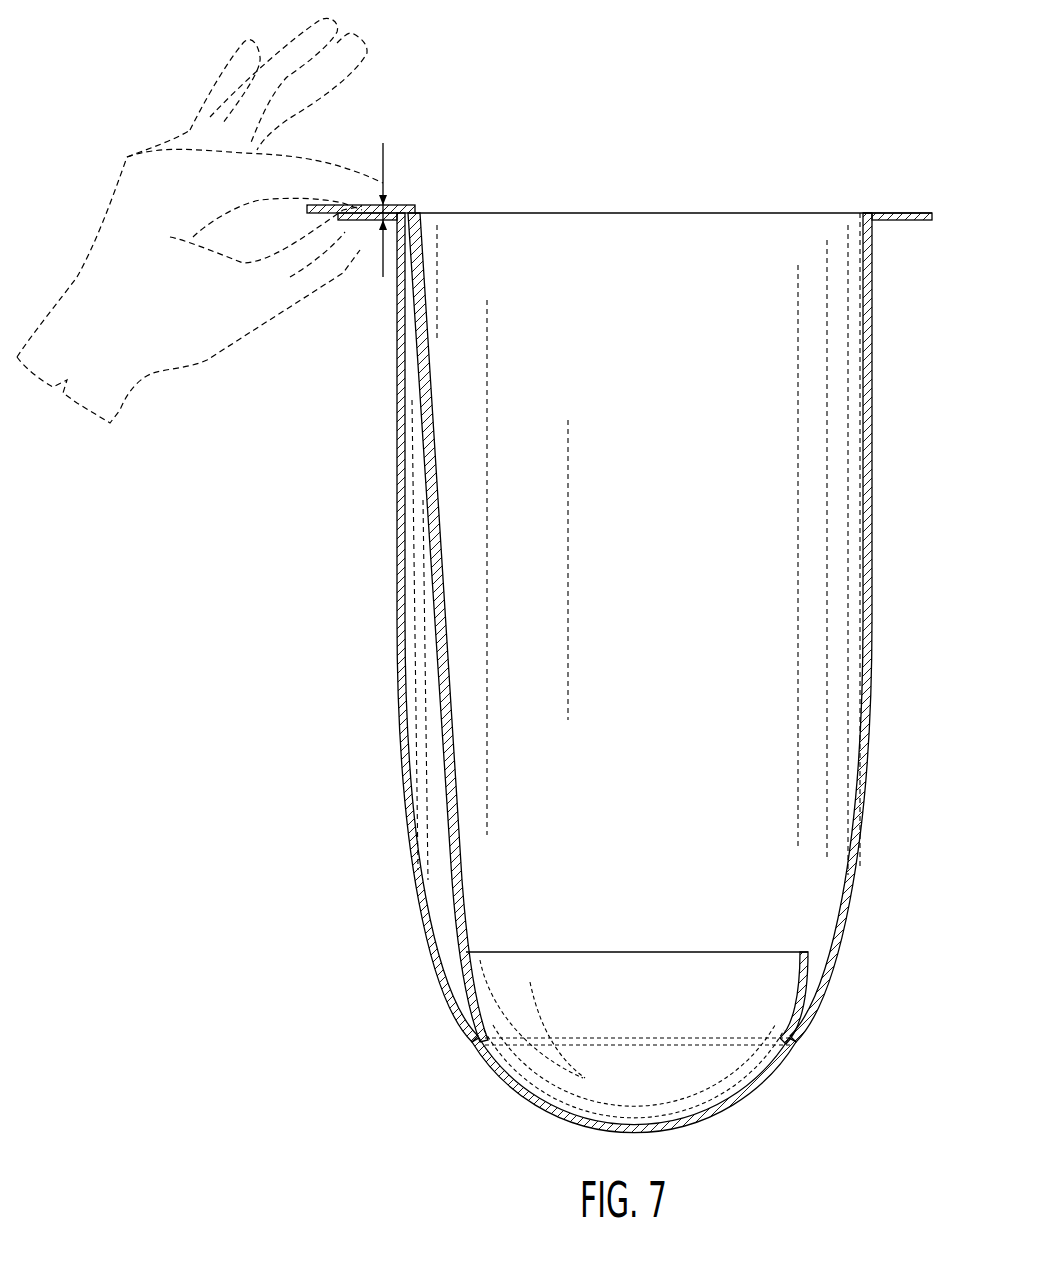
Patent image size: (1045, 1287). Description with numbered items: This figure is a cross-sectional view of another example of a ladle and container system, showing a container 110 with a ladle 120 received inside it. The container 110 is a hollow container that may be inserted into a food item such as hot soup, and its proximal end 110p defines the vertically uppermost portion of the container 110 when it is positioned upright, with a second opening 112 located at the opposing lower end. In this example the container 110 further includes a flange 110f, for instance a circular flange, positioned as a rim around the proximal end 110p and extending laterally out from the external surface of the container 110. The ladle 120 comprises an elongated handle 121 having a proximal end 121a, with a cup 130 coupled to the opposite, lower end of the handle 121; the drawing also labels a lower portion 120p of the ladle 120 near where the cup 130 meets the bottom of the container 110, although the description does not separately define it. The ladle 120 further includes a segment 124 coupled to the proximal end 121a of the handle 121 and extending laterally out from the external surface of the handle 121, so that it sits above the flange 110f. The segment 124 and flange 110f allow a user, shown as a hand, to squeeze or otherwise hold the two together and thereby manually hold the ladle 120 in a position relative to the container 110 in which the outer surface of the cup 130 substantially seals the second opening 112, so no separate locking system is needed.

The container 110 is at (873, 565).
The flange 110f is at (360, 221).
The proximal end 110p is at (859, 210).
The second opening 112 is at (683, 1047).
The ladle 120 is at (518, 295).
The liner bottom portion 120p is at (782, 1044).
The handle 121 is at (450, 702).
The proximal end 121a is at (417, 220).
The segment 124 is at (378, 205).
The cup 130 is at (616, 1091).